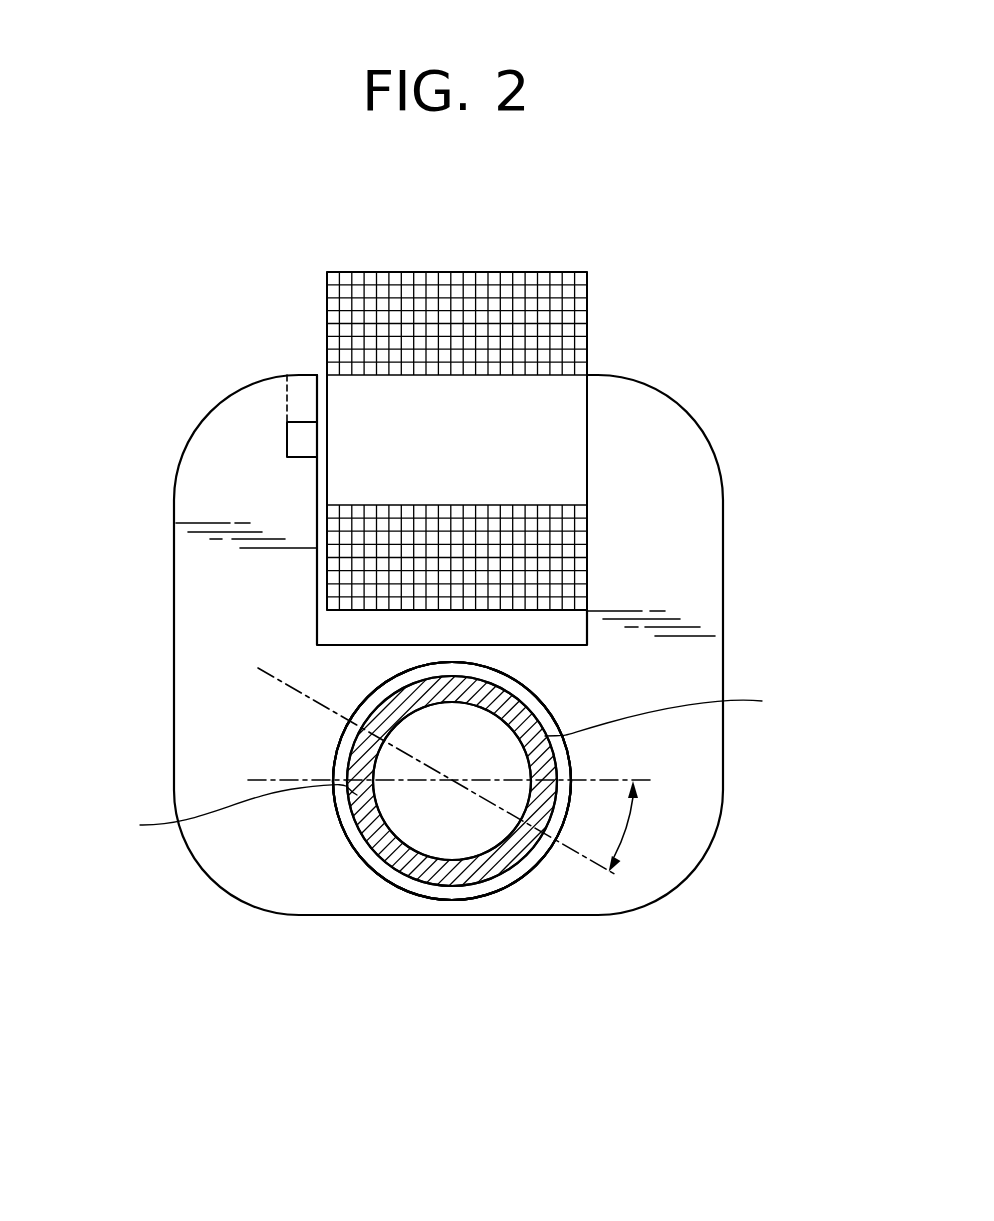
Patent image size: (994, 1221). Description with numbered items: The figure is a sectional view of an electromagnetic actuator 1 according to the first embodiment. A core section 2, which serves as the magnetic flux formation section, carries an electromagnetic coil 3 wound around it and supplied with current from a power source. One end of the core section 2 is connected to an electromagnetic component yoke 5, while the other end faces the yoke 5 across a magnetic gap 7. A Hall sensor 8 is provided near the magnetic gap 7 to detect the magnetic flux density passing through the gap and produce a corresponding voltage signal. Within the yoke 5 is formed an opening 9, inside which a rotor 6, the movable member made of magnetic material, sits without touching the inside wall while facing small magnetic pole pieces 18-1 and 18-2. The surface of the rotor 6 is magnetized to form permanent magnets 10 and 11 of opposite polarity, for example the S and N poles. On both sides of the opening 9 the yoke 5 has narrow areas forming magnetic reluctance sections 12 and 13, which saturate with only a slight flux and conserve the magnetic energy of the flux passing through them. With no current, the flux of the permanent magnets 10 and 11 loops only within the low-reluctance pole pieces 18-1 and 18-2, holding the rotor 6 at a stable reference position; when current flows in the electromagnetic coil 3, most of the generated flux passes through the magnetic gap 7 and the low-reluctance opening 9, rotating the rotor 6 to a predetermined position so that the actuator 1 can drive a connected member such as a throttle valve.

The electromagnetic actuator 1 is at (788, 637).
The core section 2 is at (547, 418).
The electromagnetic coil 3 is at (555, 313).
The yoke 5 is at (658, 558).
The rotor 6 is at (407, 798).
The magnetic gap 7 is at (323, 393).
The Hall sensor 8 is at (296, 433).
The opening 9 is at (368, 857).
The permanent magnet 10 is at (422, 863).
The permanent magnet 11 is at (564, 832).
The magnetic reluctance section 12 is at (453, 907).
The magnetic reluctance section 13 is at (453, 653).
The magnetic pole piece 18-1 is at (314, 755).
The magnetic pole piece 18-2 is at (582, 758).